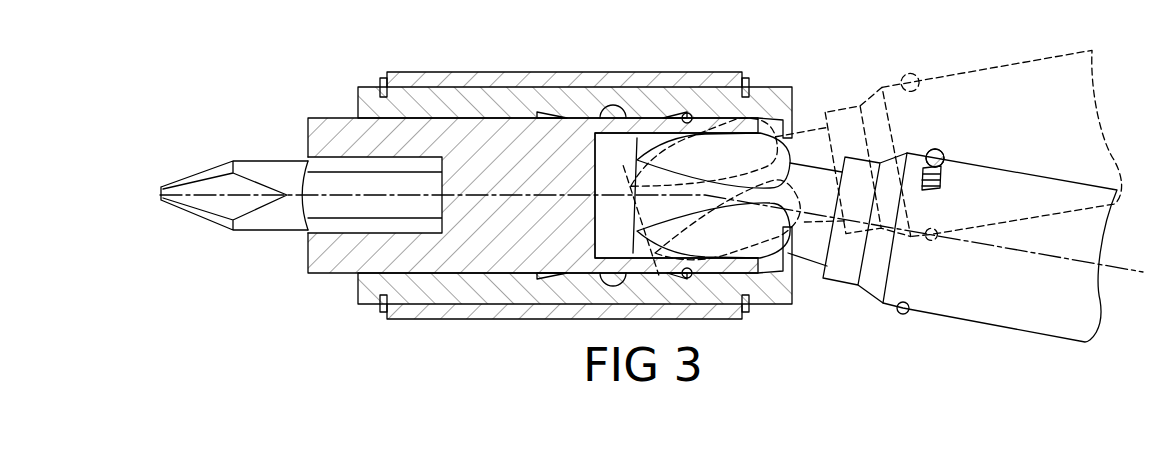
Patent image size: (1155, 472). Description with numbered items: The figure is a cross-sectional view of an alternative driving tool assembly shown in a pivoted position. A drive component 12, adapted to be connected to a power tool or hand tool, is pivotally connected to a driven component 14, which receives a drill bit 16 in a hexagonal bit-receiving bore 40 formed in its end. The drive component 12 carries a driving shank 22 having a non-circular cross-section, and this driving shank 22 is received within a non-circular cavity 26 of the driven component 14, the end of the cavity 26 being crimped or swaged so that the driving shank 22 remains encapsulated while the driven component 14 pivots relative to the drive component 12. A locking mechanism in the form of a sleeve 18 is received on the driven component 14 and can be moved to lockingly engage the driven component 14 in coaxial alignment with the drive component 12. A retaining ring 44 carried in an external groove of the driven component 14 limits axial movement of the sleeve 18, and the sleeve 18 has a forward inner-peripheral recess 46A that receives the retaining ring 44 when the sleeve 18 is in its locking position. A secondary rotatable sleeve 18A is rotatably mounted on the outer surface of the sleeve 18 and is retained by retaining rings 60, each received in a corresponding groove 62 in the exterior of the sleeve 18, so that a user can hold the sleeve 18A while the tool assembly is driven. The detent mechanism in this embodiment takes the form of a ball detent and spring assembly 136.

The drive component 12 is at (1001, 337).
The driven component 14 is at (325, 287).
The drill bit 16 is at (222, 207).
The sleeve 18 is at (595, 67).
The secondary rotatable sleeve 18A is at (410, 80).
The driving shank 22 is at (708, 255).
The non-circular cavity 26 is at (610, 145).
The bit-receiving bore 40 is at (326, 163).
The retaining ring 44 is at (688, 114).
The forward inner-peripheral recess 46A is at (548, 113).
The retaining rings 60 is at (383, 80).
The groove 62 is at (383, 314).
The ball detent and spring assembly 136 is at (944, 153).